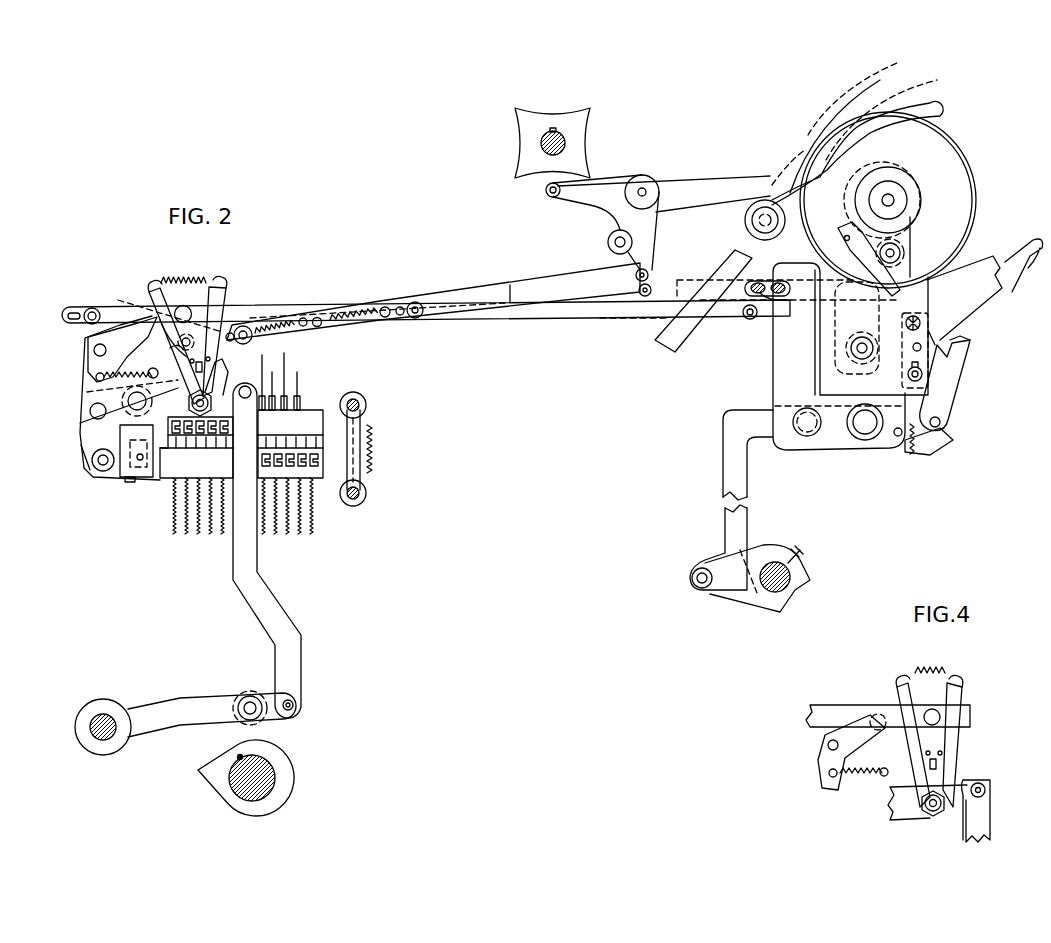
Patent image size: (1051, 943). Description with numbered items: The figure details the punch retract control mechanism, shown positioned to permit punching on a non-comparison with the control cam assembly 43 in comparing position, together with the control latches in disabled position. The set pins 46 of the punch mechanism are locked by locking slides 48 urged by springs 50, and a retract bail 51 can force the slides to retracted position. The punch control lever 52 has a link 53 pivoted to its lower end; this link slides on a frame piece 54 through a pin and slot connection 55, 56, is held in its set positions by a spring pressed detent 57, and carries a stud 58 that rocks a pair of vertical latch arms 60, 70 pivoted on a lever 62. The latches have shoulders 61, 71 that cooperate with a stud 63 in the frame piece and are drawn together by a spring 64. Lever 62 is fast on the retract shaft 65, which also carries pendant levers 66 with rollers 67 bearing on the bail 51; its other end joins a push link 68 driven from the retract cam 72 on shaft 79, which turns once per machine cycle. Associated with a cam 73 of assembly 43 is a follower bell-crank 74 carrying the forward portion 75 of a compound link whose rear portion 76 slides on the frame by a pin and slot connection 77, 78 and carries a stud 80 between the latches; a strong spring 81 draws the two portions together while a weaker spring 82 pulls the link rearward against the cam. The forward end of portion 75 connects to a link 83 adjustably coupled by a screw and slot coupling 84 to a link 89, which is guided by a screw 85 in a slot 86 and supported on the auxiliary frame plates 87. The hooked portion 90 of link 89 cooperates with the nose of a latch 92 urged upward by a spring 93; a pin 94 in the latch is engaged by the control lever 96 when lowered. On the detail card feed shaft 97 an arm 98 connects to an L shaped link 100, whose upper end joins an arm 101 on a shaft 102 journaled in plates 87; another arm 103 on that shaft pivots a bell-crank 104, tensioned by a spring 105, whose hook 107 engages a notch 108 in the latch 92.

In FIG. 2, the control cam assembly 43 is at (540, 143).
In FIG. 2, the set pins 46 is at (300, 392).
In FIG. 2, the locking slides 48 is at (330, 450).
In FIG. 2, the springs 50 is at (372, 447).
In FIG. 2, the bail 51 is at (133, 478).
In FIG. 2, the punch control lever 52 is at (940, 103).
In FIG. 2, the link 53 is at (588, 309).
In FIG. 2, the frame piece 54 is at (80, 374).
In FIG. 2, the pin 55 is at (92, 308).
In FIG. 2, the slot 56 is at (75, 312).
In FIG. 2, the spring pressed detent 57 is at (90, 337).
In FIG. 4, the spring pressed detent 57 is at (852, 752).
In FIG. 2, the stud 58 is at (182, 306).
In FIG. 4, the stud 58 is at (940, 712).
In FIG. 2, the latch arm 60 is at (160, 290).
In FIG. 4, the latch arm 60 is at (912, 744).
In FIG. 2, the shoulder 61 is at (186, 362).
In FIG. 4, the shoulder 61 is at (925, 758).
In FIG. 2, the lever 62 is at (228, 380).
In FIG. 4, the lever 62 is at (910, 808).
In FIG. 2, the stud 63 is at (203, 368).
In FIG. 4, the stud 63 is at (938, 765).
In FIG. 2, the spring 64 is at (190, 282).
In FIG. 4, the spring 64 is at (928, 672).
In FIG. 2, the retract shaft 65 is at (92, 415).
In FIG. 2, the pendant levers 66 is at (88, 449).
In FIG. 2, the rollers 67 is at (98, 466).
In FIG. 2, the push link 68 is at (285, 622).
In FIG. 2, the latch arm 70 is at (224, 288).
In FIG. 4, the latch arm 70 is at (968, 712).
In FIG. 2, the shoulder 71 is at (217, 356).
In FIG. 4, the shoulder 71 is at (943, 753).
In FIG. 2, the retract cam 72 is at (282, 760).
In FIG. 2, the cam 73 is at (585, 115).
In FIG. 2, the follower bell-crank 74 is at (600, 205).
In FIG. 2, the forward portion of compound link 75 is at (578, 283).
In FIG. 2, the rear portion of compound link 76 is at (300, 327).
In FIG. 2, the pin 77 is at (246, 327).
In FIG. 2, the slot 78 is at (230, 333).
In FIG. 2, the shaft 79 is at (266, 780).
In FIG. 2, the stud 80 is at (169, 346).
In FIG. 2, the spring 81 is at (350, 316).
In FIG. 2, the spring 82 is at (297, 320).
In FIG. 2, the link 83 is at (718, 312).
In FIG. 2, the screw and slot coupling 84 is at (767, 285).
In FIG. 2, the screw 85 is at (810, 295).
In FIG. 2, the slot 86 is at (870, 288).
In FIG. 2, the auxiliary frame plates 87 is at (773, 360).
In FIG. 2, the link 89 is at (803, 290).
In FIG. 2, the hooked portion 90 is at (940, 276).
In FIG. 2, the latch 92 is at (930, 347).
In FIG. 2, the spring 93 is at (906, 337).
In FIG. 2, the pin 94 is at (908, 373).
In FIG. 2, the control lever 96 is at (1036, 256).
In FIG. 2, the detail card feed shaft 97 is at (788, 586).
In FIG. 2, the arm 98 is at (733, 597).
In FIG. 2, the L shaped link 100 is at (722, 470).
In FIG. 2, the arm 101 is at (812, 437).
In FIG. 2, the shaft 102 is at (865, 441).
In FIG. 2, the arm 103 is at (925, 447).
In FIG. 2, the bell-crank 104 is at (958, 370).
In FIG. 2, the spring 105 is at (917, 440).
In FIG. 2, the hook 107 is at (966, 342).
In FIG. 2, the notch 108 is at (930, 330).